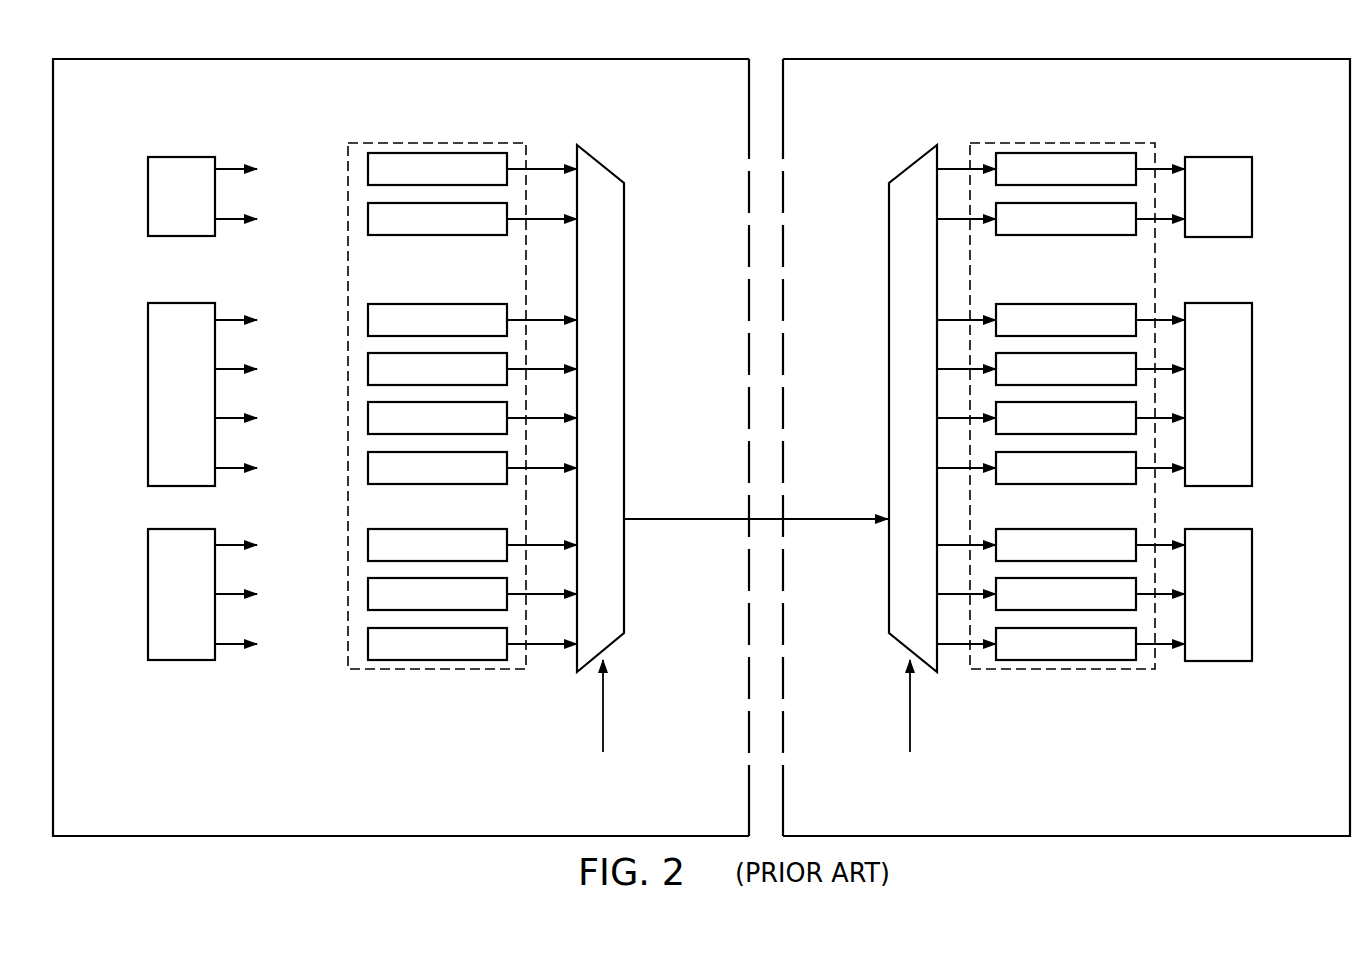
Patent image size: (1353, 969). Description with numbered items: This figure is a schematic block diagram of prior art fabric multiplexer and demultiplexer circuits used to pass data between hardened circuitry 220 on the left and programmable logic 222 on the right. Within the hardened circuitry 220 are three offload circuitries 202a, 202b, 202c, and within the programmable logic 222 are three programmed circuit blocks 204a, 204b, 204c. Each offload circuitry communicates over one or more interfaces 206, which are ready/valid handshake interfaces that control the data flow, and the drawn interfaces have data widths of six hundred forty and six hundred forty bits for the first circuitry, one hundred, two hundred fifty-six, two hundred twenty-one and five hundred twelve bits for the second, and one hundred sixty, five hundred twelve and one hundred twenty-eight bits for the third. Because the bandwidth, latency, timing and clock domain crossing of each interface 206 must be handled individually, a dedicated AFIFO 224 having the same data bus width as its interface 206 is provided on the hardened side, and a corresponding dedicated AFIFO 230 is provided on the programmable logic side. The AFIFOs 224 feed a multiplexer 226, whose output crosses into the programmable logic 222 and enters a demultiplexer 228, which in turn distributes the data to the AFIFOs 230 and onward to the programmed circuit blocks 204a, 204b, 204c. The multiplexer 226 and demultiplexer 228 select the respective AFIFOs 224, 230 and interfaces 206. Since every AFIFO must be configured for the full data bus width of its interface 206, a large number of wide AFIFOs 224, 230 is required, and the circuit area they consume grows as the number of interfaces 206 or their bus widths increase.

The offload circuitry 202a is at (148, 211).
The offload circuitry 202b is at (148, 412).
The offload circuitry 202c is at (148, 613).
The programmed circuit block 204a is at (1252, 210).
The programmed circuit block 204b is at (1252, 412).
The programmed circuit block 204c is at (1252, 613).
The interface 206 is at (218, 169).
The hardened circuitry 220 is at (642, 59).
The programmable logic 222 is at (1140, 59).
The AFIFOs 224 is at (503, 143).
The multiplexer 226 is at (603, 162).
The demultiplexer 228 is at (902, 163).
The AFIFOs 230 is at (1017, 143).